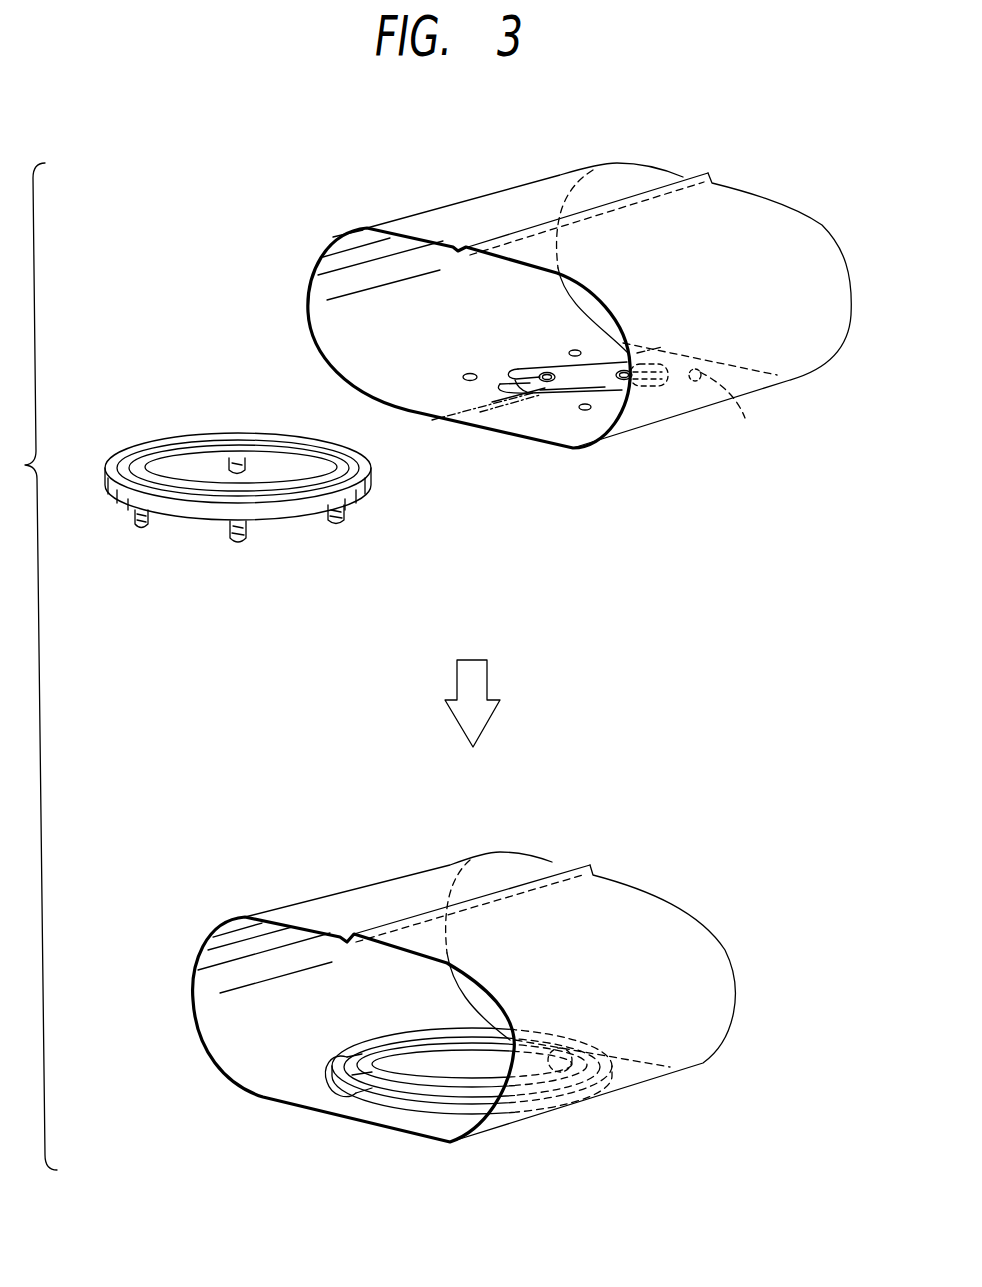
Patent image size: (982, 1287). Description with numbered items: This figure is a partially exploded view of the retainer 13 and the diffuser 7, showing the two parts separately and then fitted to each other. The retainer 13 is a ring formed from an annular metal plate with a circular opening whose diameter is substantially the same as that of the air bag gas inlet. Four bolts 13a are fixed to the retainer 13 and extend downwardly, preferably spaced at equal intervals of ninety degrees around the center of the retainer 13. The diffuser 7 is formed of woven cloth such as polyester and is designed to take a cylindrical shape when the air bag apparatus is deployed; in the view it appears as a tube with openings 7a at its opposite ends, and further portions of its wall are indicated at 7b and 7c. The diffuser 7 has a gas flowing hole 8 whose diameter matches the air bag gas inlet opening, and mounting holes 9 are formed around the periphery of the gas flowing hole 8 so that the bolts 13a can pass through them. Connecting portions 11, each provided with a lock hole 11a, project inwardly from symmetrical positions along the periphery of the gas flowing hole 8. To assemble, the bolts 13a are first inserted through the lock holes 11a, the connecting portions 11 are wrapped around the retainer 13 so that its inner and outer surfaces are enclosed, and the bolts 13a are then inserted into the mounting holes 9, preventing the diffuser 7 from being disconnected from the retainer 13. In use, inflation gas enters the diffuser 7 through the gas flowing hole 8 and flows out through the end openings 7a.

The diffuser 7 is at (537, 160).
The openings 7a is at (327, 283).
The tank bottom wall 7b is at (494, 408).
The tank wall edge 7c is at (455, 424).
The gas flowing hole 8 is at (606, 388).
The mounting holes 9 is at (470, 372).
The connecting portions 11 is at (520, 390).
The lock holes 11a is at (545, 372).
The retainer 13 is at (135, 426).
The bolts 13a is at (254, 462).